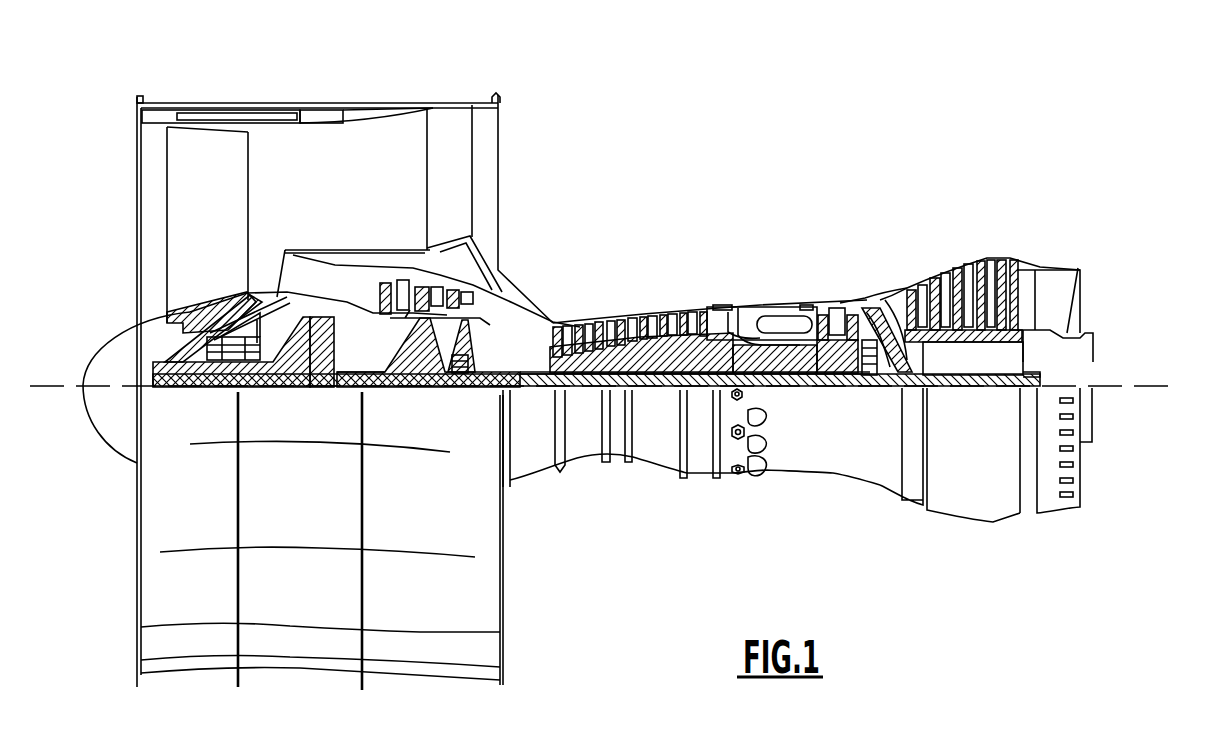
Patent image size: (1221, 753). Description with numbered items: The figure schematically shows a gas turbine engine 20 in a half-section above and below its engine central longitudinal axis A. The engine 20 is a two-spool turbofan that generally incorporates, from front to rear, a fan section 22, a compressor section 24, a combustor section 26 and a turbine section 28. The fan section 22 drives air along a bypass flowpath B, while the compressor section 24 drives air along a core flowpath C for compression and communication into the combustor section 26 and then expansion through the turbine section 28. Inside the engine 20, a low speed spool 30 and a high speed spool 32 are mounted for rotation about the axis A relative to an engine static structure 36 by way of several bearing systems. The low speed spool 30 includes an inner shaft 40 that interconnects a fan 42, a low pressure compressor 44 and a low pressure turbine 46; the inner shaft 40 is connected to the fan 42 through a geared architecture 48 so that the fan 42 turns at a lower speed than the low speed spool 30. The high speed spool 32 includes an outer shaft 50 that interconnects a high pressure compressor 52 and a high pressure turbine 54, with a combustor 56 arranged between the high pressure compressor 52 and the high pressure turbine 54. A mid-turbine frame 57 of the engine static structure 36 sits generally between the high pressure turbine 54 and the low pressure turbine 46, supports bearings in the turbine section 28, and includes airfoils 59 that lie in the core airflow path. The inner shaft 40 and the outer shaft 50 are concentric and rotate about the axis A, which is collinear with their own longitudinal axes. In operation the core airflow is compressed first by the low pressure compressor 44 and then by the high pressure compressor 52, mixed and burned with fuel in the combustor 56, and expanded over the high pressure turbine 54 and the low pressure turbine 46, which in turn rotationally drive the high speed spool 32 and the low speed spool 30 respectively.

The gas turbine engine 20 is at (780, 156).
The fan section 22 is at (248, 96).
The compressor section 24 is at (550, 297).
The combustor section 26 is at (773, 283).
The turbine section 28 is at (920, 247).
The low speed spool 30 is at (658, 392).
The high speed spool 32 is at (697, 353).
The engine static structure 36 is at (698, 475).
The inner shaft 40 is at (520, 390).
The fan 42 is at (222, 231).
The low pressure compressor 44 is at (433, 290).
The low pressure turbine 46 is at (967, 277).
The geared architecture 48 is at (328, 370).
The outer shaft 50 is at (785, 382).
The high pressure compressor 52 is at (632, 357).
The high pressure turbine 54 is at (837, 307).
The combustor 56 is at (770, 330).
The mid-turbine frame 57 is at (882, 298).
The airfoils 59 is at (910, 345).
The engine central longitudinal axis A is at (1173, 386).
The bypass flowpath B is at (287, 178).
The core flowpath C is at (328, 285).